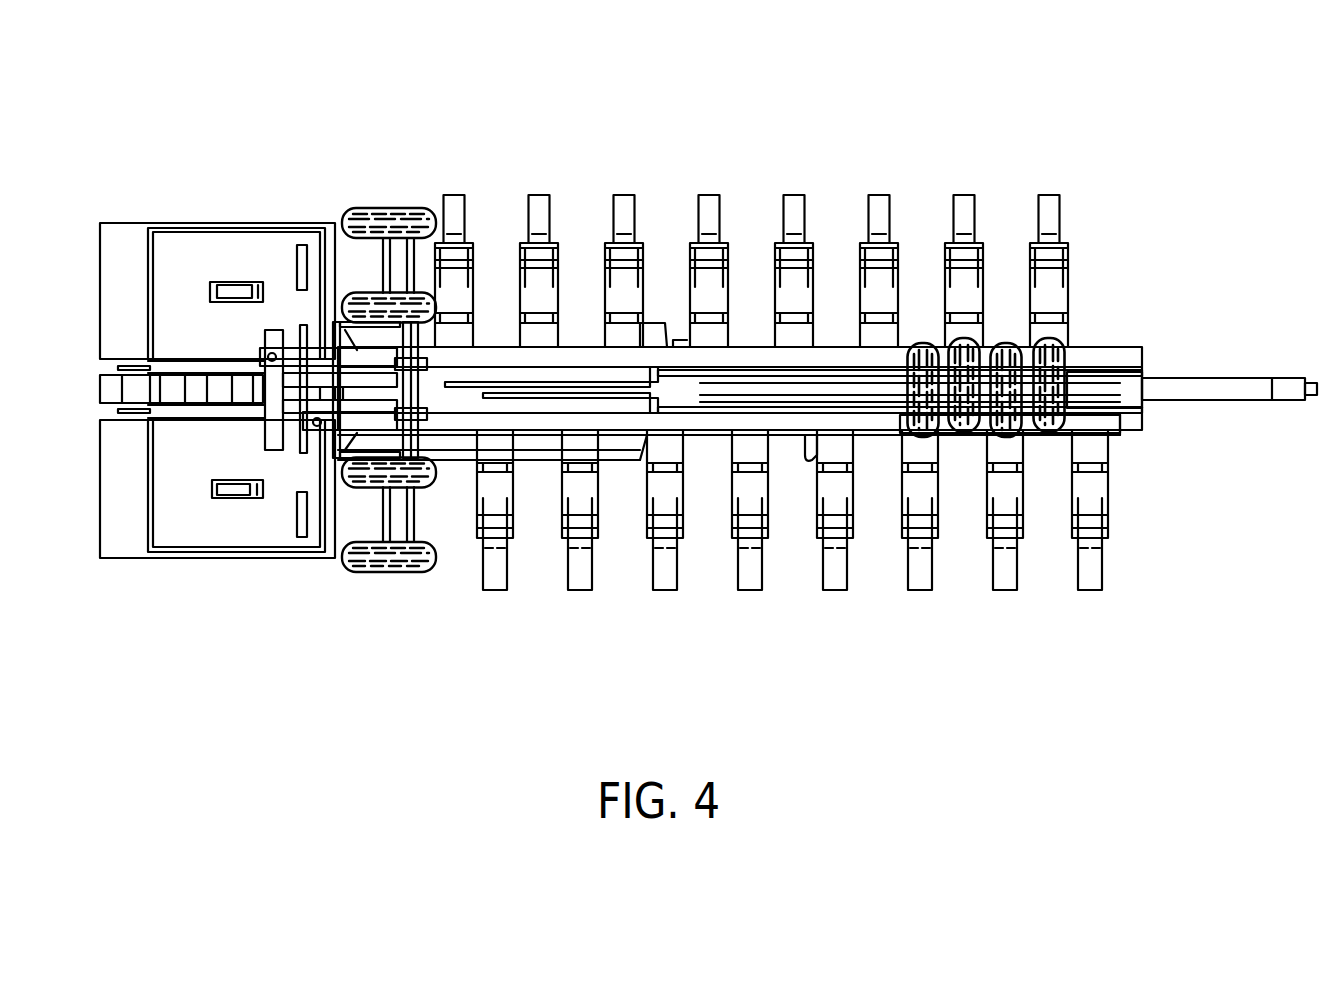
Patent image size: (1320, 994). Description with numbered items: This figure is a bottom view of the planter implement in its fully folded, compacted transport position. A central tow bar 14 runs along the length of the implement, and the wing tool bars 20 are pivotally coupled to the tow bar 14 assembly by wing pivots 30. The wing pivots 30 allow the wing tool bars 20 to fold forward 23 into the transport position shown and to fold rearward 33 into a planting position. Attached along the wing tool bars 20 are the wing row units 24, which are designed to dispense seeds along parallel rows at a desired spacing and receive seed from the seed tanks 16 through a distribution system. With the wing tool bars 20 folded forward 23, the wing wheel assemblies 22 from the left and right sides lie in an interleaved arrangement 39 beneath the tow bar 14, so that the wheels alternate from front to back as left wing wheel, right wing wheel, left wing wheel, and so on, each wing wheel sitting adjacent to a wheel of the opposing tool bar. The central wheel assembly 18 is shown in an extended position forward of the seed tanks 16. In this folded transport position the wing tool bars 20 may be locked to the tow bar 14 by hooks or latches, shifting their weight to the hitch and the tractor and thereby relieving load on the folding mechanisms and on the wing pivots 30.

The tow bar 14 is at (1143, 393).
The seed tanks 16 is at (98, 340).
The central wheel assembly 18 is at (388, 197).
The wing tool bars 20 is at (870, 355).
The wing wheel assemblies 22 is at (960, 337).
The forward fold direction 23 is at (587, 162).
The wing row units 24 is at (796, 188).
The wing pivots 30 is at (272, 362).
The rearward fold direction 33 is at (608, 155).
The interleaved arrangement 39 is at (967, 445).